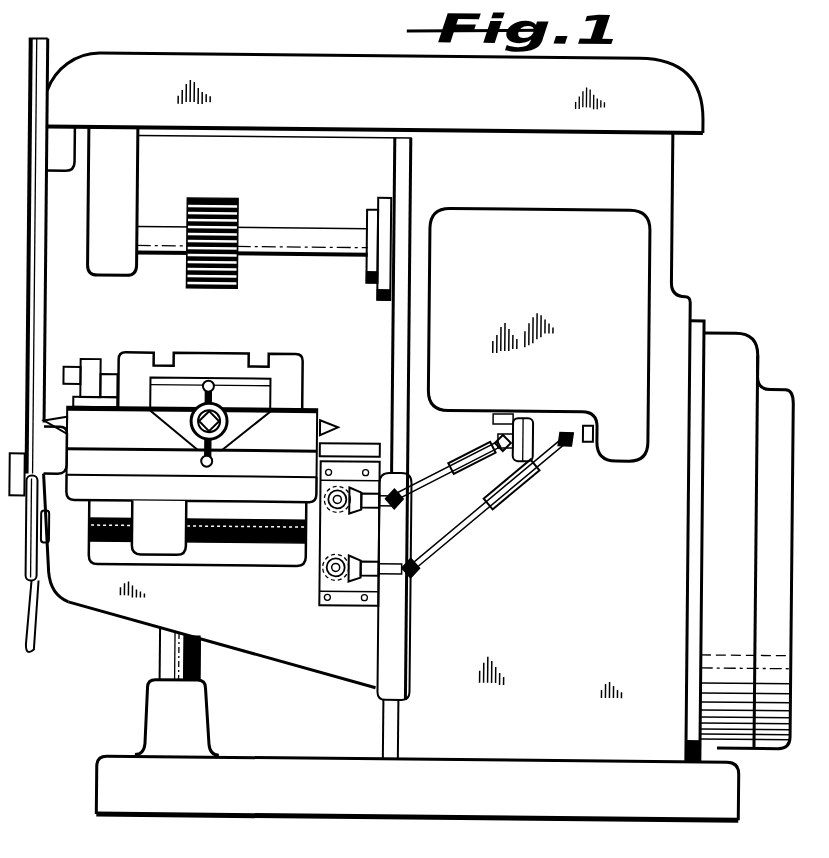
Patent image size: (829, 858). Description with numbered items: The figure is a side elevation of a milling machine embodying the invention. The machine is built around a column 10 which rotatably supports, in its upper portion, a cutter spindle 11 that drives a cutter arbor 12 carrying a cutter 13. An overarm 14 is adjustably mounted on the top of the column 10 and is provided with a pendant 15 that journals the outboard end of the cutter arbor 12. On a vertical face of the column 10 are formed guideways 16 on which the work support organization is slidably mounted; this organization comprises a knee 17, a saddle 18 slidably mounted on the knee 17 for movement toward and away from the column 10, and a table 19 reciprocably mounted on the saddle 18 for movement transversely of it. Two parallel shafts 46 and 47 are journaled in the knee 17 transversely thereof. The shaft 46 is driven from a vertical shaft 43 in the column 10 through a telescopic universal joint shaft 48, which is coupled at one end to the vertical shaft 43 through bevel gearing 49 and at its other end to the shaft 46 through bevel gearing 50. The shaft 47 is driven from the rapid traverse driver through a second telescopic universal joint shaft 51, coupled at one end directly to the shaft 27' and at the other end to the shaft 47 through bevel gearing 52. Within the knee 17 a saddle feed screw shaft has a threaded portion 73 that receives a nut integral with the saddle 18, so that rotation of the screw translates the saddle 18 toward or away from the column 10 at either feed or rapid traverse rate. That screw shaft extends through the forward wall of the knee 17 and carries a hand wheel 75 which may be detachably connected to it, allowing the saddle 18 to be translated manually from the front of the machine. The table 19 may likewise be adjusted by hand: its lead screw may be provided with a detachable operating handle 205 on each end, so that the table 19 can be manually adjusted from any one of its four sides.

The column 10 is at (672, 258).
The cutter spindle 11 is at (373, 210).
The cutter arbor 12 is at (342, 216).
The cutter 13 is at (238, 210).
The overarm 14 is at (110, 38).
The pendant 15 is at (140, 168).
The guideways 16 is at (388, 343).
The knee 17 is at (90, 602).
The saddle 18 is at (322, 452).
The table 19 is at (296, 381).
The detachable operating handle 205 is at (217, 405).
The shaft 27' is at (596, 465).
The vertical shaft 43 is at (513, 422).
The shaft 46 is at (330, 492).
The shaft 47 is at (332, 580).
The telescopic universal joint shaft 48 is at (482, 462).
The bevel gearing 49 is at (498, 438).
The bevel gearing 50 is at (342, 480).
The telescopic universal joint shaft 51 is at (520, 483).
The bevel gearing 52 is at (346, 592).
The threaded portion 73 is at (215, 545).
The hand wheel 75 is at (32, 638).